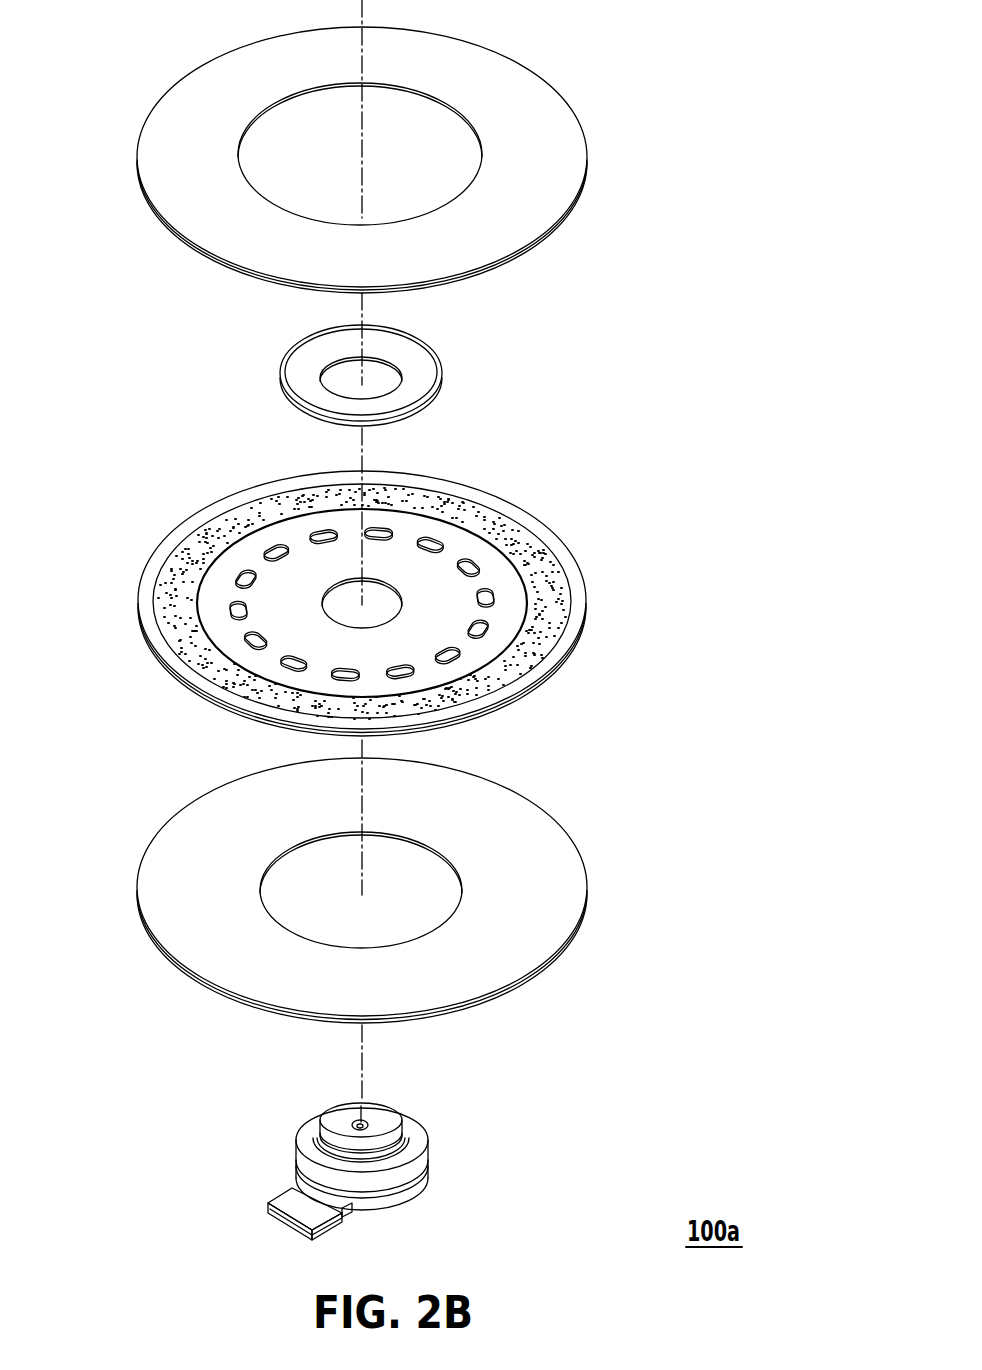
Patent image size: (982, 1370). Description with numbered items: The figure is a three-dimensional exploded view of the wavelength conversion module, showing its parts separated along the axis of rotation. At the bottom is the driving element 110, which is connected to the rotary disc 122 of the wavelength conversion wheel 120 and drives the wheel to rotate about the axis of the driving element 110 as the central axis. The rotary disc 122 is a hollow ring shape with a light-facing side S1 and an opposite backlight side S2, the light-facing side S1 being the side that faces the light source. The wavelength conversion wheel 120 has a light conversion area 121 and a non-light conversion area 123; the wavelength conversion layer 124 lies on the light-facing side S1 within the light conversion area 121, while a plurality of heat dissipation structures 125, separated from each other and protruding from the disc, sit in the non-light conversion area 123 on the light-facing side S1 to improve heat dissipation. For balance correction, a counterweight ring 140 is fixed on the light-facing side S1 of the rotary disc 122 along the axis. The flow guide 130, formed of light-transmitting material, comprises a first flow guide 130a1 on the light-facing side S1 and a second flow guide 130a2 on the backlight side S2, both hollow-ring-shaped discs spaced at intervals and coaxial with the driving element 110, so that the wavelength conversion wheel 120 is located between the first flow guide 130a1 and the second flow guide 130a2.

The driving element 110 is at (417, 1140).
The wavelength conversion wheel 120 is at (409, 605).
The light conversion area 121 is at (524, 547).
The rotary disc 122 is at (580, 602).
The non-light conversion area 123 is at (453, 540).
The wavelength conversion layer 124 is at (552, 568).
The heat dissipation structures 125 is at (490, 624).
The flow guide 130 is at (466, 525).
The first flow guide 130a1 is at (570, 158).
The second flow guide 130a2 is at (575, 882).
The counterweight ring 140 is at (422, 373).
The light-facing side S1 is at (166, 496).
The backlight side S2 is at (166, 710).